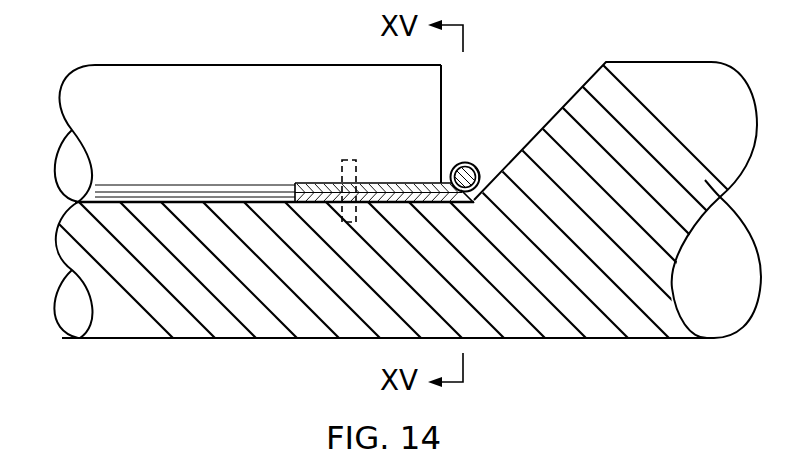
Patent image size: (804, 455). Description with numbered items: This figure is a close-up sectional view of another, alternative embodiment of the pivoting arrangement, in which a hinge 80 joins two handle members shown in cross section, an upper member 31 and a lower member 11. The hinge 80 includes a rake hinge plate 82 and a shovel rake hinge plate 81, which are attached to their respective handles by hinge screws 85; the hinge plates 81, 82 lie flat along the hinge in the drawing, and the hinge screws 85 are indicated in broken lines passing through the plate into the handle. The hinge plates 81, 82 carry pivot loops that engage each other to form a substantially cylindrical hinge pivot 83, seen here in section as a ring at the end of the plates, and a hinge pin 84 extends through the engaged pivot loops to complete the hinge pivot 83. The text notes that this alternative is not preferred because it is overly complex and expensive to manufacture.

The substrate block 11 is at (206, 261).
The upper block 31 is at (206, 133).
The hinge 80 is at (492, 190).
The shovel rake hinge plate 81 is at (392, 182).
The rake hinge plate 82 is at (447, 203).
The hinge pivot 83 is at (472, 163).
The hinge pin 84 is at (480, 168).
The hinge screws 85 is at (352, 160).